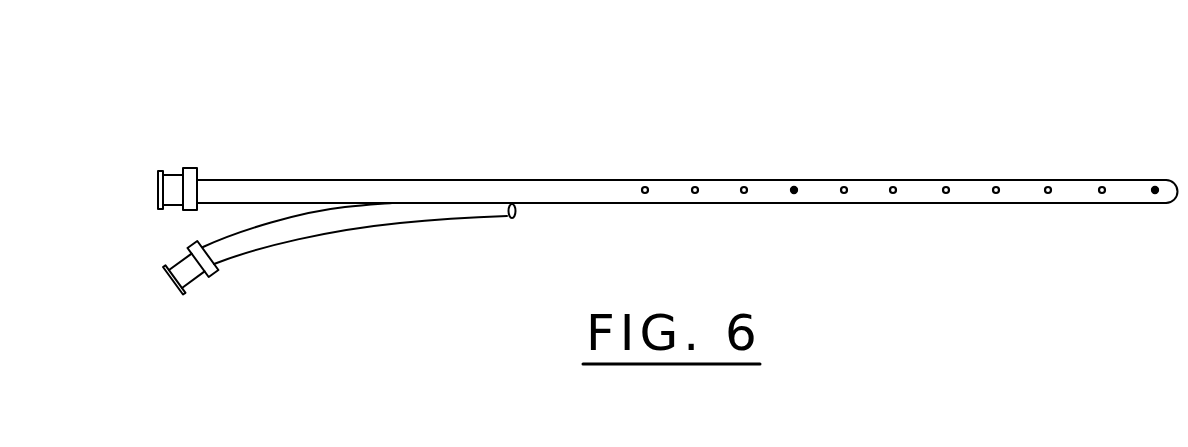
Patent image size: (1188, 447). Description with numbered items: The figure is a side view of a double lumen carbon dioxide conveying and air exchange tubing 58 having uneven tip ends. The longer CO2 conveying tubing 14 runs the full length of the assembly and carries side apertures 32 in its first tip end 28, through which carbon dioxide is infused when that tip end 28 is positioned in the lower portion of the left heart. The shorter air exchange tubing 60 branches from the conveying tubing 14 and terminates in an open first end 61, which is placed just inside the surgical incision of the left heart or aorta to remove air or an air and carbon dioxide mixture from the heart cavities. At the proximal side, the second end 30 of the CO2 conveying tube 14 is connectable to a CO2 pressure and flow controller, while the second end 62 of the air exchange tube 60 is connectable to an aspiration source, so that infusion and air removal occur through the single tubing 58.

The CO2 conveying tubing 14 is at (580, 180).
The first (tip) end 28 is at (1076, 204).
The second end 30 is at (172, 185).
The side apertures 32 is at (893, 193).
The double lumen CO2 conveying/air exchange tubing 58 is at (910, 171).
The air exchange tubing 60 is at (337, 230).
The open first end 61 is at (514, 218).
The second end 62 is at (190, 266).